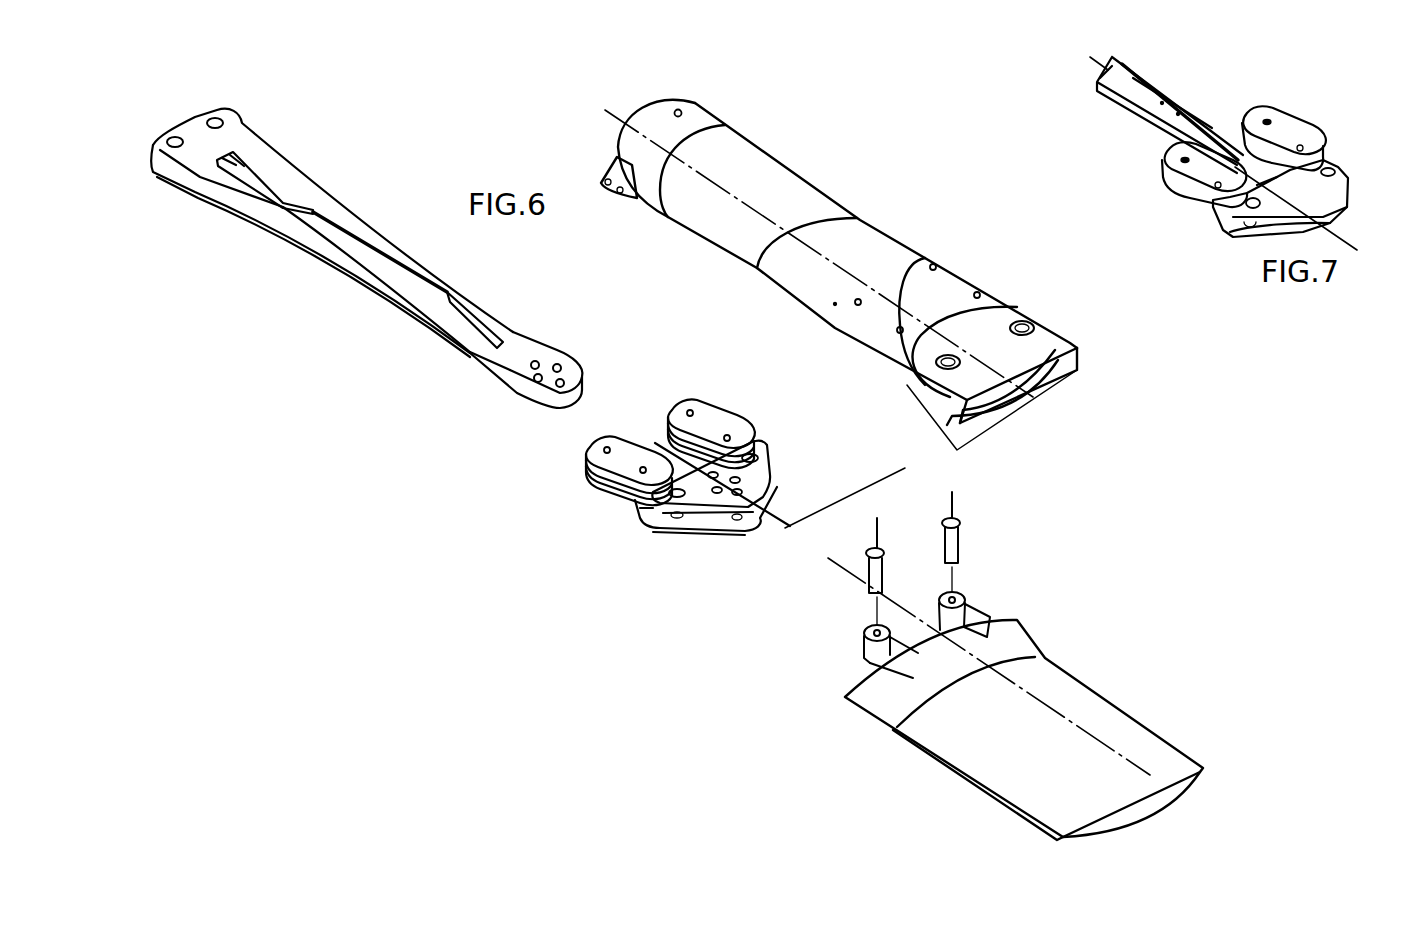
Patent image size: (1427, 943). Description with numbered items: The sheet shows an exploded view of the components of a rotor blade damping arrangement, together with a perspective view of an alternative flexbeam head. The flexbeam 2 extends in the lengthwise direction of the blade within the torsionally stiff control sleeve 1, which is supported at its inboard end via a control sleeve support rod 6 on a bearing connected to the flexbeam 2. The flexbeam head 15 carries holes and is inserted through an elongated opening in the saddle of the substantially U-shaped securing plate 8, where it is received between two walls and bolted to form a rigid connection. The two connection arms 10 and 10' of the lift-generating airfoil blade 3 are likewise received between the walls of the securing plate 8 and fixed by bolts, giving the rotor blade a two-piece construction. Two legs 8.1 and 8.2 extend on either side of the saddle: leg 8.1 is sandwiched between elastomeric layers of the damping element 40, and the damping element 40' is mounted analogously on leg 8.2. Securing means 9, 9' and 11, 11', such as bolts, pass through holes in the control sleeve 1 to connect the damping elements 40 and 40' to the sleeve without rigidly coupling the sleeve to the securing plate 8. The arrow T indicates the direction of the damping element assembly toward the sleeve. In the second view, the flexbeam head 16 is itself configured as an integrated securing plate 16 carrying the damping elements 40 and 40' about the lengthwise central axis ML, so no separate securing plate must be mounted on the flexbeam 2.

In FIG. 6, the control sleeve 1 is at (797, 195).
In FIG. 6, the flexbeam 2 is at (260, 202).
In FIG. 7, the flexbeam 2 is at (1123, 92).
In FIG. 6, the lift-generating airfoil blade 3 is at (1117, 730).
In FIG. 6, the control sleeve support rod 6 is at (682, 111).
In FIG. 6, the securing plate 8 is at (710, 508).
In FIG. 6, the leg of the securing plate 8.1 is at (632, 500).
In FIG. 6, the leg of the securing plate 8.2 is at (752, 442).
In FIG. 6, the securing means 9 is at (827, 320).
In FIG. 6, the securing means 9' is at (873, 348).
In FIG. 6, the connection arm 10 is at (865, 598).
In FIG. 6, the connection arm 10' is at (982, 564).
In FIG. 6, the securing means 11 is at (727, 376).
In FIG. 6, the securing means 11' is at (765, 400).
In FIG. 6, the flexbeam head 15 is at (525, 357).
In FIG. 7, the flexbeam head configured as securing plate 16 is at (1337, 182).
In FIG. 6, the damping element 40 is at (600, 470).
In FIG. 7, the damping element 40 is at (1180, 171).
In FIG. 6, the damping element 40' is at (735, 430).
In FIG. 7, the damping element 40' is at (1291, 130).
In FIG. 6, the direction arrow T is at (661, 566).
In FIG. 7, the lengthwise central axis ML is at (1254, 172).